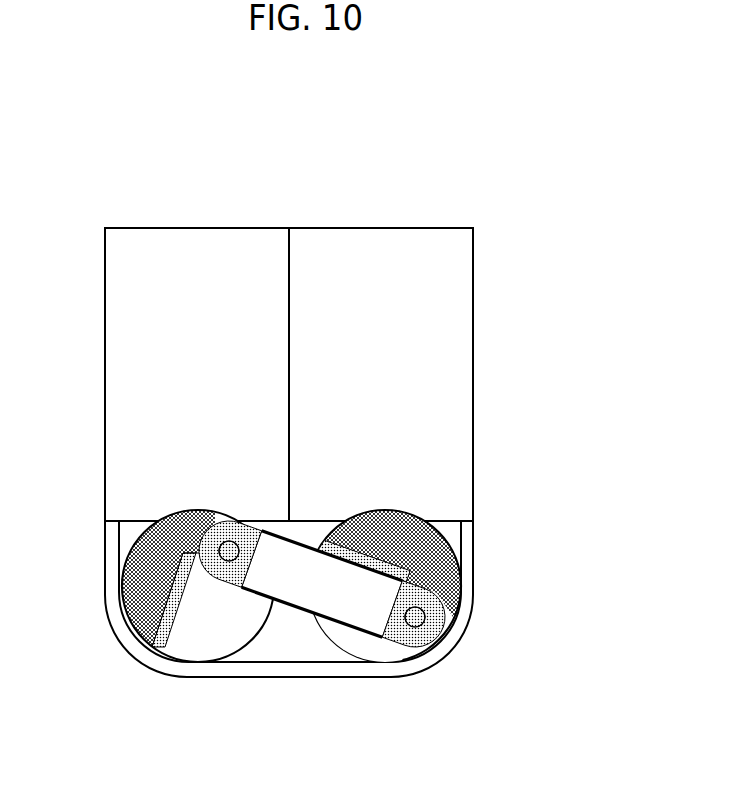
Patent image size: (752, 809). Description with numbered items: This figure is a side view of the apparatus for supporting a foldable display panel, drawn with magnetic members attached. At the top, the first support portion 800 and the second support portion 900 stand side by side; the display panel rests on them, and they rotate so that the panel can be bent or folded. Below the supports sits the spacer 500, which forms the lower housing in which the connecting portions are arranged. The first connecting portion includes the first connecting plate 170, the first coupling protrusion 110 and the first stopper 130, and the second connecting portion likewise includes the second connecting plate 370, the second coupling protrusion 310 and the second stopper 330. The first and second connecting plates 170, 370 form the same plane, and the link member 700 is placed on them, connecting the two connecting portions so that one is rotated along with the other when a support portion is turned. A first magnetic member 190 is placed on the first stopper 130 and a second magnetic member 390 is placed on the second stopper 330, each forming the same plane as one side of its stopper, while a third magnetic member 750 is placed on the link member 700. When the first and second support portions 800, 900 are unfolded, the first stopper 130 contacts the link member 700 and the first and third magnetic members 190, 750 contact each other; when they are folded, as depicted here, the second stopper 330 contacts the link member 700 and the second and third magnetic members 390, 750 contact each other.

The first coupling protrusion 110 is at (235, 588).
The first stopper 130 is at (140, 592).
The first connecting plate 170 is at (192, 650).
The first magnetic member 190 is at (150, 640).
The second coupling protrusion 310 is at (423, 650).
The second stopper 330 is at (430, 547).
The second connecting plate 370 is at (367, 643).
The second magnetic member 390 is at (418, 580).
The spacer 500 is at (461, 614).
The link member 700 is at (437, 622).
The third magnetic member 750 is at (297, 582).
The first support portion 800 is at (213, 246).
The second support portion 900 is at (410, 246).